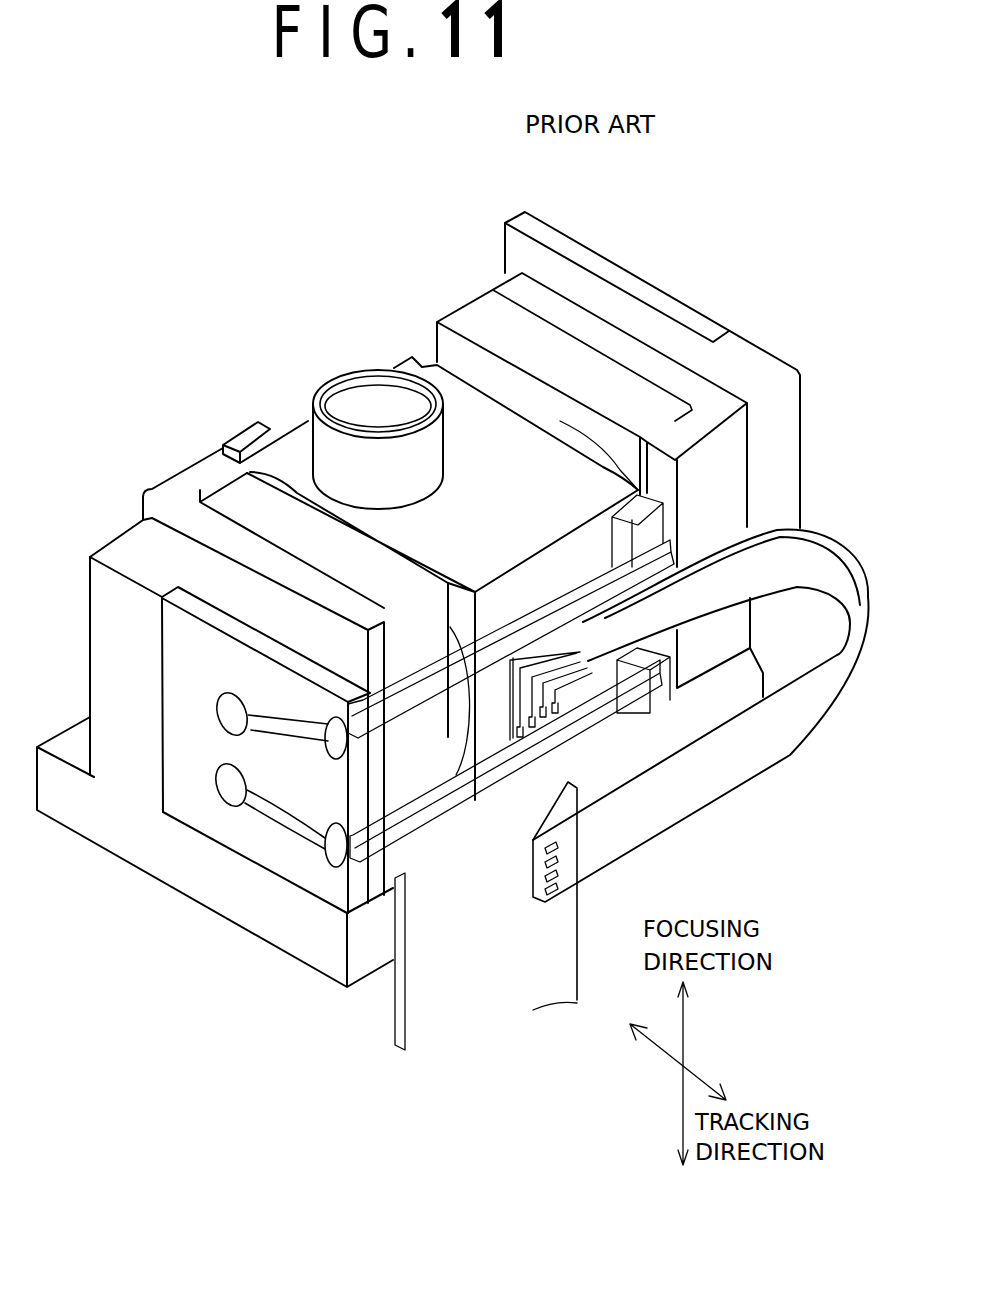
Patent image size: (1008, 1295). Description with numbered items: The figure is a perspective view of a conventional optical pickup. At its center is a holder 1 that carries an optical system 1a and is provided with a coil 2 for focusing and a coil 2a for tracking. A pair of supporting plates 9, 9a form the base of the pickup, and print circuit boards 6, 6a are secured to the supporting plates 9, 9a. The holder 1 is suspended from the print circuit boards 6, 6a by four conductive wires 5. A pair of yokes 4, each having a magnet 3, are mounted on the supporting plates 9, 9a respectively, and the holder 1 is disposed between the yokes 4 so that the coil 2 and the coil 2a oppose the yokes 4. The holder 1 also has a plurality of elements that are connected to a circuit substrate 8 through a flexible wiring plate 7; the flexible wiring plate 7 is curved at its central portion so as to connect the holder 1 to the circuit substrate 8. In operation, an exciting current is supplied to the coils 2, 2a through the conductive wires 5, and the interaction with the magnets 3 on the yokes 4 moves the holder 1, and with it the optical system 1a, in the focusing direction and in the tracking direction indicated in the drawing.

The holder 1 is at (297, 420).
The optical system 1a is at (357, 373).
The coil for focusing 2 is at (515, 408).
The coil for tracking 2a is at (473, 733).
The magnet 3 is at (283, 527).
The yoke 4 is at (163, 503).
The conductive wire 5 is at (597, 700).
The print circuit board 6 is at (548, 235).
The print circuit board 6a is at (183, 797).
The flexible wiring plate 7 is at (853, 647).
The circuit substrate 8 is at (547, 982).
The supporting plate 9 is at (802, 458).
The supporting plate 9a is at (92, 668).